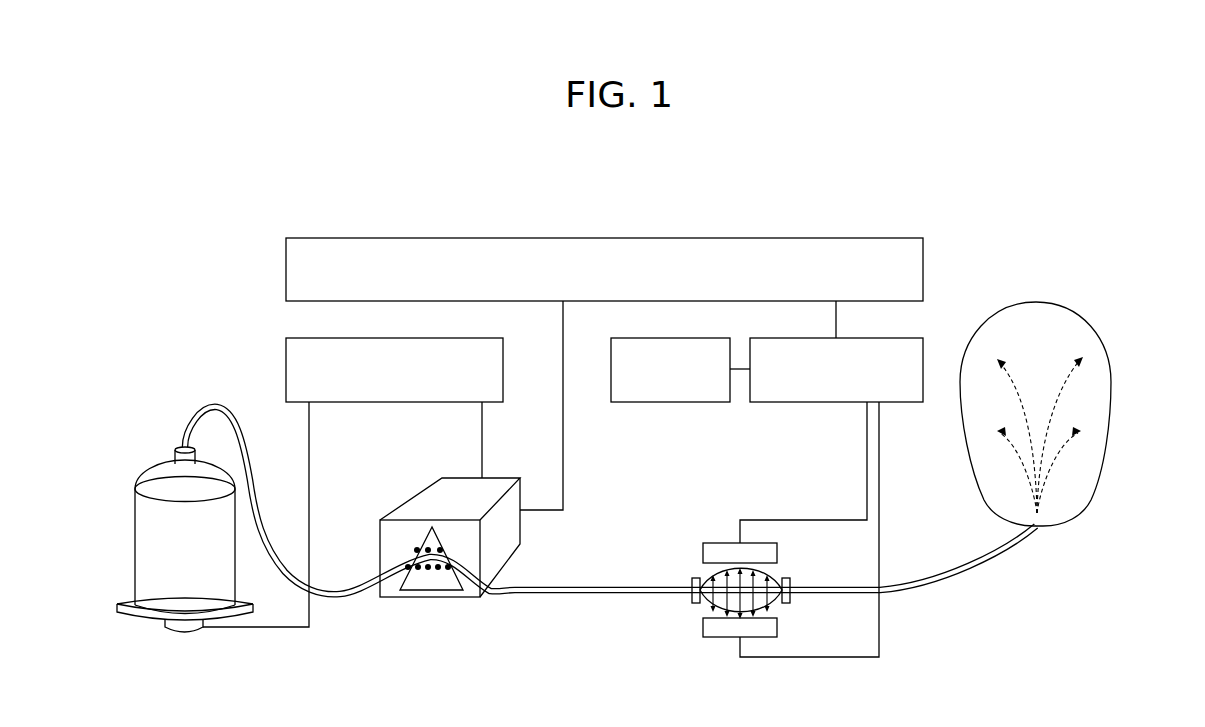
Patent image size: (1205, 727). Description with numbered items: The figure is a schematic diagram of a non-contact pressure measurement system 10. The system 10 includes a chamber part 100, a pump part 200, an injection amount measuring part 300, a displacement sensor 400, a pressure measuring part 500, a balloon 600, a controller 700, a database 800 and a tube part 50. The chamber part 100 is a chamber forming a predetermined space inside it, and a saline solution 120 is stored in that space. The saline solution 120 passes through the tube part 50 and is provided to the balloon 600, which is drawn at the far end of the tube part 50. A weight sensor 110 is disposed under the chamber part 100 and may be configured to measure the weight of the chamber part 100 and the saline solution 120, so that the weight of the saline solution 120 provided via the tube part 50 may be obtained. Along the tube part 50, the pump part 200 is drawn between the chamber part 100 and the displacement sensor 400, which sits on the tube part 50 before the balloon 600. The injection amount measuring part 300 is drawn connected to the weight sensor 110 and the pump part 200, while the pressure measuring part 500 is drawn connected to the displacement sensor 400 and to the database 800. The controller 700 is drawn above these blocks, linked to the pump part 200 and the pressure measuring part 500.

The non-contact pressure measurement system 10 is at (966, 201).
The tube part 50 is at (568, 596).
The chamber part 100 is at (135, 518).
The weight sensor 110 is at (182, 636).
The saline solution 120 is at (143, 570).
The pump part 200 is at (427, 599).
The injection amount measuring part 300 is at (394, 403).
The displacement sensor 400 is at (714, 651).
The pressure measuring part 500 is at (814, 403).
The balloon 600 is at (1104, 437).
The controller 700 is at (602, 237).
The database 800 is at (669, 403).